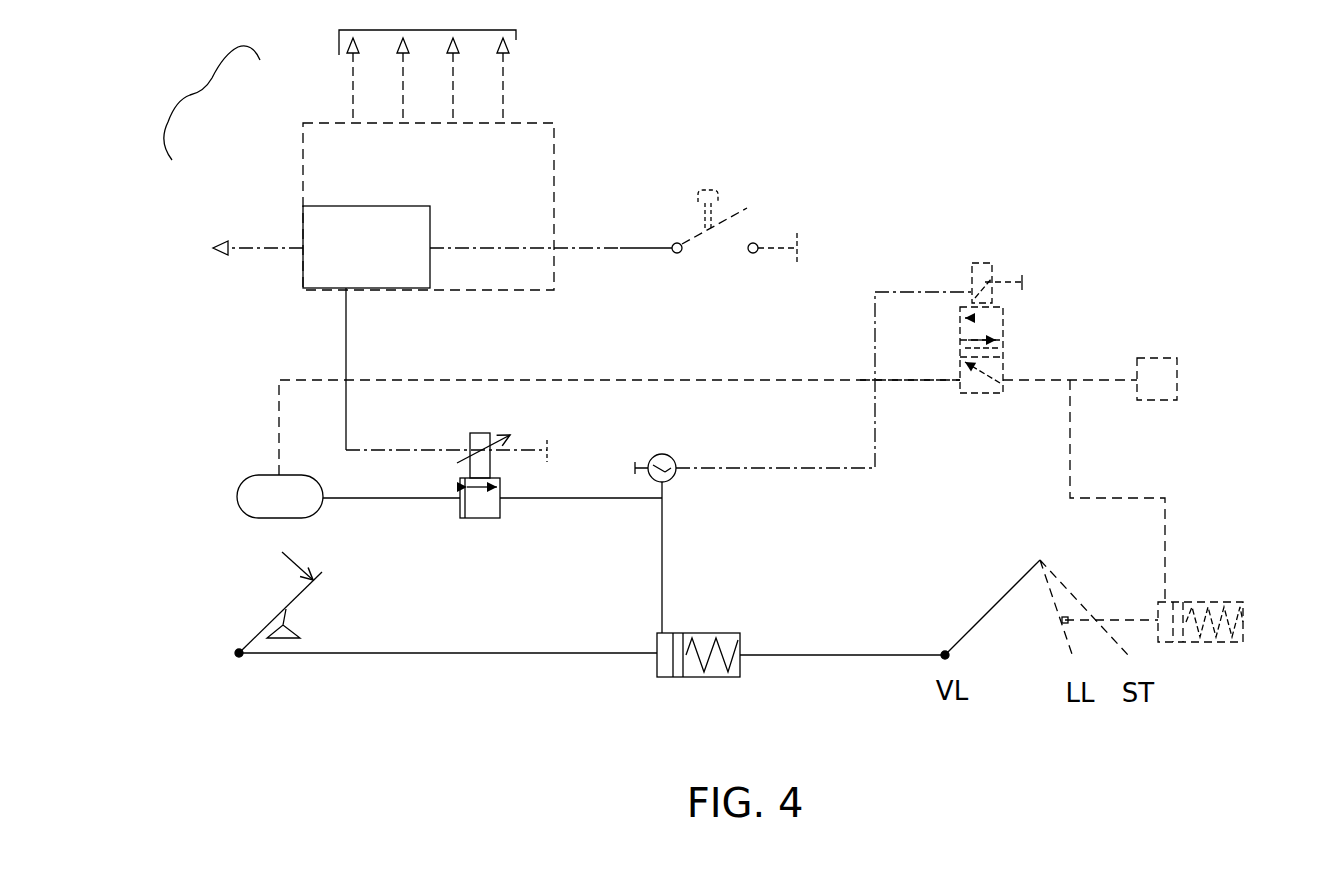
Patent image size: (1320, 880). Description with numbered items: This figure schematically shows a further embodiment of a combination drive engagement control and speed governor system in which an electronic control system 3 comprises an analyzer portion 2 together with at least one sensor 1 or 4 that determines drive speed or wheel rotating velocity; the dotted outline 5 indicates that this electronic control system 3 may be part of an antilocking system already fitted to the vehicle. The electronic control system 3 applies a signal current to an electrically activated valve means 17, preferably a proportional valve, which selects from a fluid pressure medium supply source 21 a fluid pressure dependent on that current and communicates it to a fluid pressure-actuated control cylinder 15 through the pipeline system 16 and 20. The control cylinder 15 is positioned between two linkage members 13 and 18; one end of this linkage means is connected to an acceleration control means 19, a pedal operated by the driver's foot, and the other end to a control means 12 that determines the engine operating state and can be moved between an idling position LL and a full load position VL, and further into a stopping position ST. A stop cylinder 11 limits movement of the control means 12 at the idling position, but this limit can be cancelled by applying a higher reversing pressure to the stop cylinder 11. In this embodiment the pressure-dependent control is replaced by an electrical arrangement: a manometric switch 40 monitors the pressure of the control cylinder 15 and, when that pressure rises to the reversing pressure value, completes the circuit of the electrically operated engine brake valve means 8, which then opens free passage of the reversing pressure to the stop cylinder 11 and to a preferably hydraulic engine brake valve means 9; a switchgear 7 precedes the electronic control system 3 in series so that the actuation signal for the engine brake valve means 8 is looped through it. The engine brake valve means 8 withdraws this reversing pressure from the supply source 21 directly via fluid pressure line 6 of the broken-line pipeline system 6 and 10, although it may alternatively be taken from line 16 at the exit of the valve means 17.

The sensor 1 is at (222, 243).
The analyzer portion 2 is at (310, 222).
The electronic control system 3 is at (212, 103).
The sensor 4 is at (339, 32).
The dotted outline 5 is at (562, 175).
The fluid pressure line 6 is at (553, 378).
The switchgear 7 is at (723, 207).
The engine brake valve means 8 is at (997, 255).
The engine brake valve means 9 is at (1160, 352).
The pipeline 10 is at (1133, 498).
The stop cylinder 11 is at (1198, 600).
The control means 12 is at (985, 620).
The linkage member 13 is at (797, 655).
The fluid pressure-actuated control cylinder 15 is at (690, 683).
The pipeline 16 is at (662, 583).
The electrically activated valve means 17 is at (480, 530).
The linkage member 18 is at (370, 655).
The acceleration control means 19 is at (268, 608).
The pipeline 20 is at (393, 503).
The fluid pressure medium supply source 21 is at (252, 487).
The manometric switch 40 is at (665, 452).